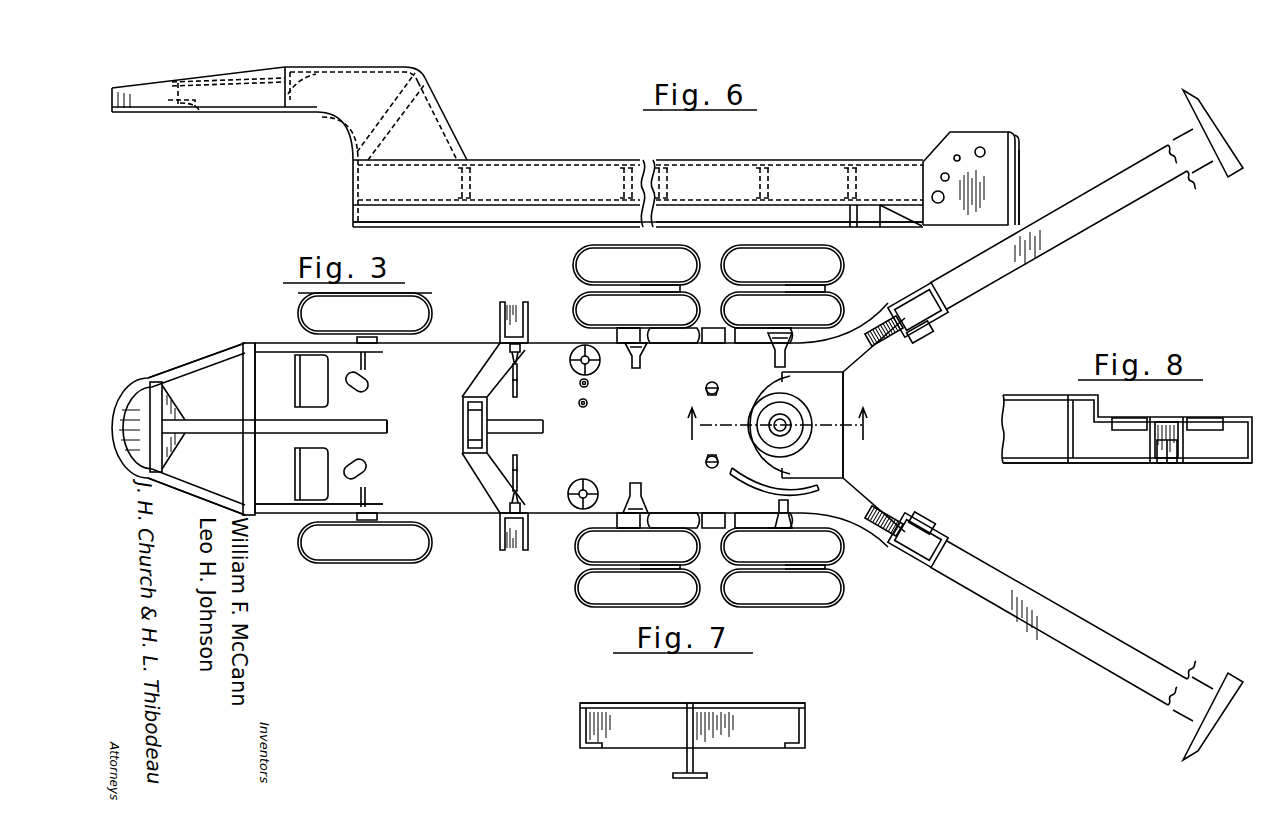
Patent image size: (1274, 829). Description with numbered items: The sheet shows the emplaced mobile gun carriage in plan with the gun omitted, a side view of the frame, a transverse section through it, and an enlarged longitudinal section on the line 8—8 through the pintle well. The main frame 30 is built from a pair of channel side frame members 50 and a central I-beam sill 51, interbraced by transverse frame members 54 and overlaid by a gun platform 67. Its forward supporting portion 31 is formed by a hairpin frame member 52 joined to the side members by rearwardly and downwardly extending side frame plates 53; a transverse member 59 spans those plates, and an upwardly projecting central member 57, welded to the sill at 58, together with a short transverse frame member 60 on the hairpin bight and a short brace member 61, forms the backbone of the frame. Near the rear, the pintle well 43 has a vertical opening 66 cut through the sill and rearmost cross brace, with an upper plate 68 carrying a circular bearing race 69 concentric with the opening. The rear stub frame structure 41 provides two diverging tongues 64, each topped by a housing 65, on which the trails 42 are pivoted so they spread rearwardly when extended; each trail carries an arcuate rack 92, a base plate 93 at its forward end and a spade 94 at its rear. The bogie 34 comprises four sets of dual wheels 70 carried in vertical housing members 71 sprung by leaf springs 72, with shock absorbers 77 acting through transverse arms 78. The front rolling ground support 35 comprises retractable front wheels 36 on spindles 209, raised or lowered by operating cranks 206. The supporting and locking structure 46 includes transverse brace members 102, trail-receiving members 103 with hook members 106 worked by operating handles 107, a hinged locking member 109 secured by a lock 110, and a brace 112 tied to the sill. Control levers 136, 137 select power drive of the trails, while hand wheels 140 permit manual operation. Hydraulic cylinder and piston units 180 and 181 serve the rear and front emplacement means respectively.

In FIG. 3, the section line 8— 8 is at (778, 435).
In FIG. 7, the main frame 30 is at (816, 705).
In FIG. 8, the main frame 30 is at (1047, 471).
In FIG. 6, the supporting portion 31 is at (144, 106).
In FIG. 3, the supporting portion 31 is at (140, 370).
In FIG. 3, the bogie 34 is at (810, 614).
In FIG. 3, the front rolling ground support 35 is at (428, 569).
In FIG. 3, the front wheels 36 is at (310, 310).
In FIG. 6, the stub frame structure 41 is at (1028, 181).
In FIG. 3, the stub frame structure 41 is at (858, 477).
In FIG. 3, the trails 42 is at (1070, 232).
In FIG. 3, the pintle well 43 is at (795, 446).
In FIG. 8, the pintle well 43 is at (1149, 473).
In FIG. 3, the supporting and locking structure 46 is at (470, 381).
In FIG. 6, the side frame members 50 is at (703, 162).
In FIG. 7, the side frame members 50 is at (595, 750).
In FIG. 6, the central frame member 51 is at (512, 226).
In FIG. 7, the central frame member 51 is at (698, 778).
In FIG. 6, the hairpin frame member 52 is at (246, 112).
In FIG. 3, the hairpin frame member 52 is at (222, 352).
In FIG. 6, the side frame plates 53 is at (428, 112).
In FIG. 3, the side frame plates 53 is at (290, 347).
In FIG. 6, the transverse frame members 54 is at (472, 183).
In FIG. 7, the transverse frame members 54 is at (742, 705).
In FIG. 8, the transverse frame members 54 is at (1068, 431).
In FIG. 3, the central member 57 is at (290, 425).
In FIG. 6, the weld junction 58 is at (468, 161).
In FIG. 3, the weld junction 58 is at (388, 427).
In FIG. 6, the transverse member 59 is at (318, 80).
In FIG. 3, the transverse member 59 is at (248, 343).
In FIG. 6, the short transverse frame member 60 is at (190, 106).
In FIG. 3, the short transverse frame member 60 is at (159, 384).
In FIG. 6, the brace member 61 is at (255, 80).
In FIG. 3, the brace member 61 is at (225, 432).
In FIG. 6, the supporting tongues 64 is at (973, 218).
In FIG. 3, the supporting tongues 64 is at (890, 310).
In FIG. 6, the housing 65 is at (968, 132).
In FIG. 3, the housing 65 is at (858, 362).
In FIG. 3, the vertical opening 66 is at (778, 418).
In FIG. 8, the vertical opening 66 is at (1168, 465).
In FIG. 6, the gun platform 67 is at (377, 68).
In FIG. 3, the gun platform 67 is at (447, 514).
In FIG. 8, the gun platform 67 is at (1046, 395).
In FIG. 8, the upper plate 68 is at (1198, 418).
In FIG. 3, the bearing race 69 is at (806, 409).
In FIG. 8, the bearing race 69 is at (1128, 418).
In FIG. 3, the dual wheels 70 is at (688, 256).
In FIG. 3, the vertical housing member 71 is at (632, 332).
In FIG. 3, the leaf spring 72 is at (713, 344).
In FIG. 3, the shock absorbers 77 is at (641, 368).
In FIG. 3, the shock absorber arm 78 is at (646, 347).
In FIG. 3, the arcuate rack 92 is at (893, 343).
In FIG. 3, the base plate 93 is at (933, 334).
In FIG. 3, the spade 94 is at (1208, 112).
In FIG. 3, the transverse brace members 102 is at (490, 366).
In FIG. 3, the trail-receiving member 103 is at (514, 302).
In FIG. 3, the hook member 106 is at (521, 352).
In FIG. 3, the operating handle 107 is at (517, 390).
In FIG. 3, the locking member 109 is at (462, 401).
In FIG. 3, the lock 110 is at (462, 453).
In FIG. 3, the brace 112 is at (543, 427).
In FIG. 3, the control lever 136 is at (589, 384).
In FIG. 3, the control lever 137 is at (588, 404).
In FIG. 3, the hand wheel 140 is at (578, 348).
In FIG. 3, the two-way hydraulic cylinder and piston unit 180 is at (710, 382).
In FIG. 3, the two-way hydraulic cylinder and piston unit 181 is at (368, 383).
In FIG. 3, the operating crank 206 is at (368, 362).
In FIG. 3, the spindle 209 is at (382, 343).